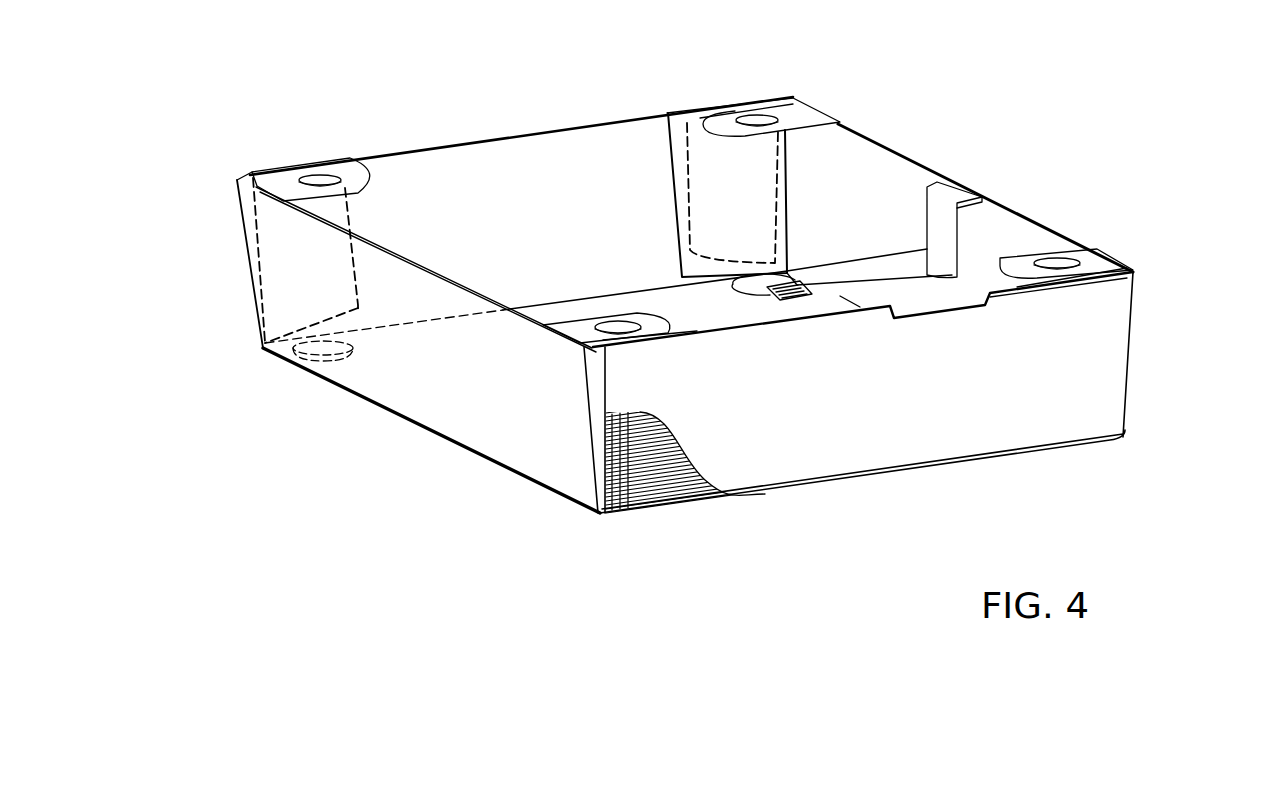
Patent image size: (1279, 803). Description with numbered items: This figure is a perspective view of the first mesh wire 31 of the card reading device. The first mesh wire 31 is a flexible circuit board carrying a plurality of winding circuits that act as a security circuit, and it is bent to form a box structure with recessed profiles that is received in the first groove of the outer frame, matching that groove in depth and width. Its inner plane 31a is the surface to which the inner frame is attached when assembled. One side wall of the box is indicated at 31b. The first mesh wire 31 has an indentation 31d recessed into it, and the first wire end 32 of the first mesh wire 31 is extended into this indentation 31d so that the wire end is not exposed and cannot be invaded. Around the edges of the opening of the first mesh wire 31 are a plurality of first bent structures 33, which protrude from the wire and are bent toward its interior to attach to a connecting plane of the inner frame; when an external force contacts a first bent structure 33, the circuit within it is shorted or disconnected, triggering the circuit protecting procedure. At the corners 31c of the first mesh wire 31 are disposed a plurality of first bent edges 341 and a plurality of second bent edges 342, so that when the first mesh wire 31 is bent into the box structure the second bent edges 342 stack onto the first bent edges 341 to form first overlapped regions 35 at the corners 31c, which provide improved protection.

The first mesh wire 31 is at (1060, 367).
The inner plane 31a is at (458, 168).
The side wall 31b is at (403, 398).
The corners 31c is at (248, 250).
The indentation 31d is at (577, 307).
The first wire end 32 is at (800, 283).
The first bent structures 33 is at (1095, 262).
The first bent edges 341 is at (703, 147).
The second bent edges 342 is at (680, 160).
The first overlapped regions 35 is at (712, 203).